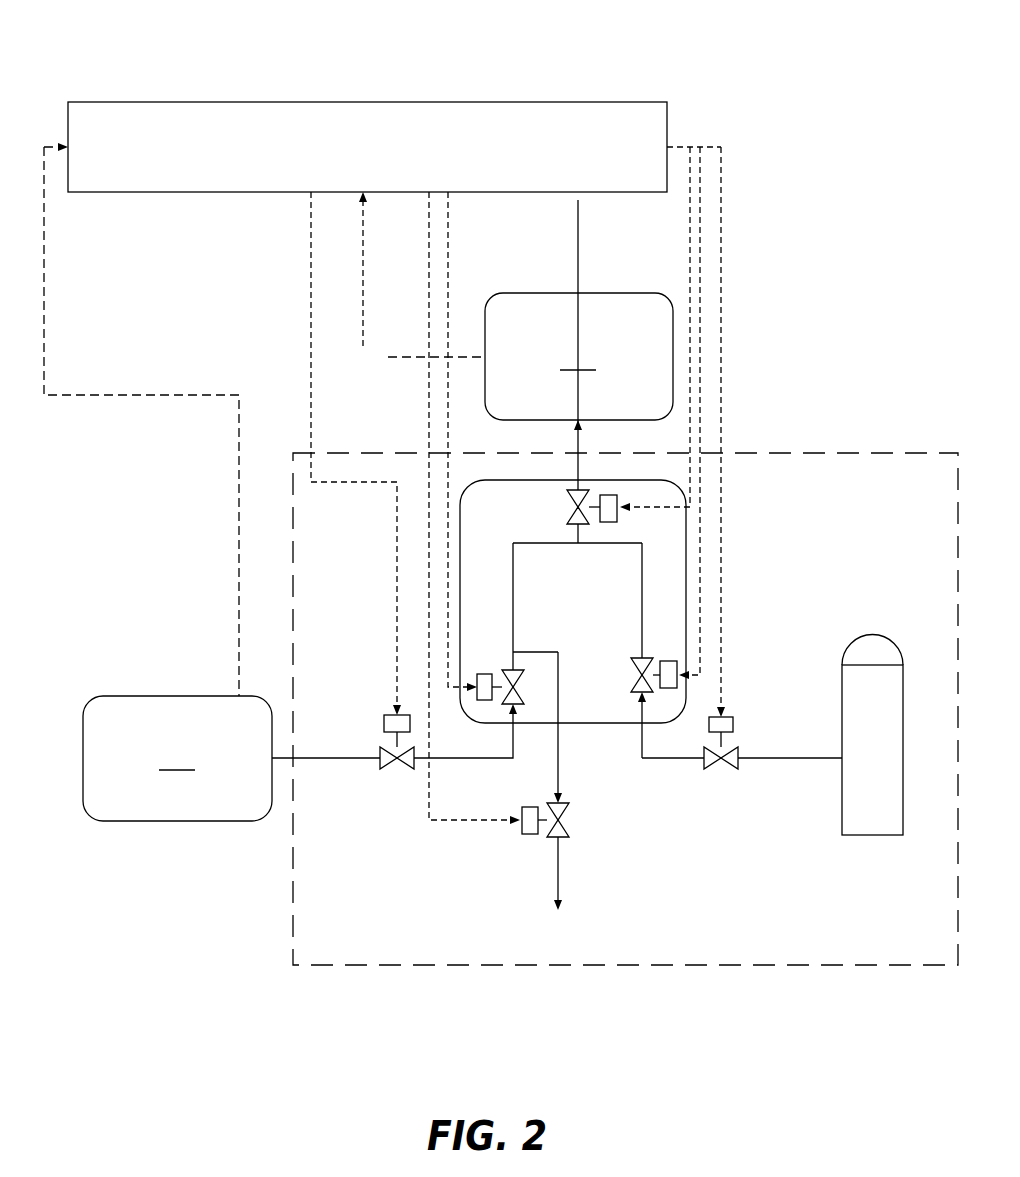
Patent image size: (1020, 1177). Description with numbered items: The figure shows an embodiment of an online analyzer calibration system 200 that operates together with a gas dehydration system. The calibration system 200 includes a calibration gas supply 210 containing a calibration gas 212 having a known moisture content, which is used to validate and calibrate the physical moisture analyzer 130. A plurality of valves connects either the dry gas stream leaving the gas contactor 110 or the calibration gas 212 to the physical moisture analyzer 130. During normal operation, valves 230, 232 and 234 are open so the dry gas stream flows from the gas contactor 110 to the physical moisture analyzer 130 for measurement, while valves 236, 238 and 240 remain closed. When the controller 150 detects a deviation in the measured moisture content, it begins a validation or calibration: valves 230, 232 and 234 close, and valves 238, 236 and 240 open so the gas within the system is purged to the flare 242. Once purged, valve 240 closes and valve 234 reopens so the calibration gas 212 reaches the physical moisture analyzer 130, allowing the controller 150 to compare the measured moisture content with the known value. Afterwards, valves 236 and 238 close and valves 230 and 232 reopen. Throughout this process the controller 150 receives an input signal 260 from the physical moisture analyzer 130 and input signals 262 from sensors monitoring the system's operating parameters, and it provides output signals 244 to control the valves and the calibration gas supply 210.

The online analyzer calibration system 200 is at (826, 77).
The controller 150 is at (368, 102).
The physical moisture analyzer 130 is at (508, 356).
The gas contactor 110 is at (177, 726).
The calibration gas supply 210 is at (873, 636).
The calibration gas 212 is at (790, 760).
The valve 230 is at (397, 797).
The valve 232 is at (505, 668).
The valve 234 is at (540, 505).
The valve 236 is at (650, 660).
The valve 238 is at (720, 794).
The valve 240 is at (594, 822).
The flare 242 is at (558, 880).
The output signals 244 is at (311, 288).
The input signal 260 is at (362, 241).
The input signals 262 is at (140, 395).